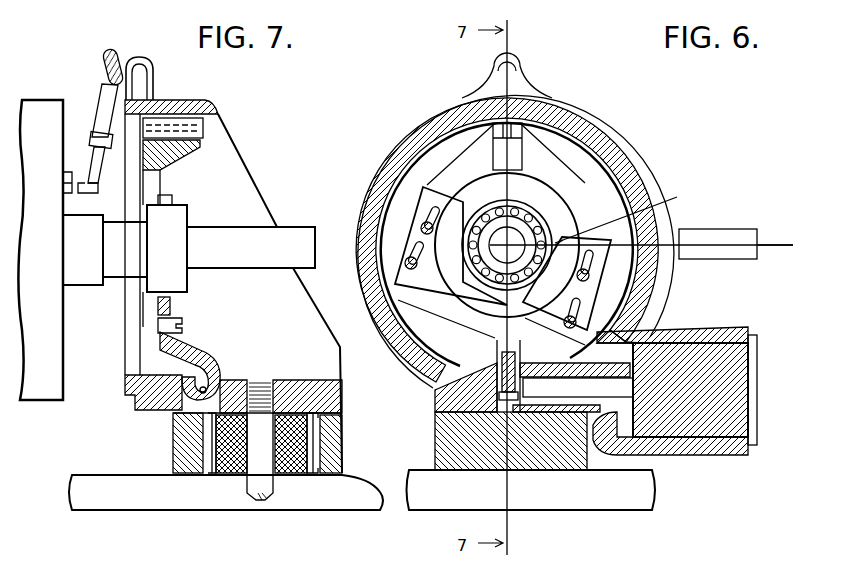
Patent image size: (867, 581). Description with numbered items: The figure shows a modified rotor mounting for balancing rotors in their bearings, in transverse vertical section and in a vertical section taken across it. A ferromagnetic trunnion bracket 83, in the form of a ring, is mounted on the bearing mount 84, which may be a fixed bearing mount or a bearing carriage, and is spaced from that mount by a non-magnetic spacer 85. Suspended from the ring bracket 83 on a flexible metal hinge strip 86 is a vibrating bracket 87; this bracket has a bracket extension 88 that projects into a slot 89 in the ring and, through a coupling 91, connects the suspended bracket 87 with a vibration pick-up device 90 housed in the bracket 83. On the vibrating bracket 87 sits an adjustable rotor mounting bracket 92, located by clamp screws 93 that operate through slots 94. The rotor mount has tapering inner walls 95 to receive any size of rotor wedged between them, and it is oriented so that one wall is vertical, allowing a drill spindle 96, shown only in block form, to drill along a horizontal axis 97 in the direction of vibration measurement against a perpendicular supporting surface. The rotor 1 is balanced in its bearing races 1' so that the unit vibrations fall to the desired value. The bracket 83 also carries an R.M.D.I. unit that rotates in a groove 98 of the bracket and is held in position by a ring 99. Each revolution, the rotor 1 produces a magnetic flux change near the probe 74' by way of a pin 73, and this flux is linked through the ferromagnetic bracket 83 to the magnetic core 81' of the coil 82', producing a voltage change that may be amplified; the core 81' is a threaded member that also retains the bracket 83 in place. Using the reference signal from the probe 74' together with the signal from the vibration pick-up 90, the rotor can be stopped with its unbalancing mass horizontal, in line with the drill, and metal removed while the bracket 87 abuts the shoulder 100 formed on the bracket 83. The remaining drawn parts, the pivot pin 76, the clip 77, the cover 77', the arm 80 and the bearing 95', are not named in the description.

In FIG. 7, the rotor 1 is at (40, 268).
In FIG. 7, the bearing races 1' is at (231, 243).
In FIG. 6, the bearing races 1' is at (641, 197).
In FIG. 7, the pin 73 is at (66, 172).
In FIG. 7, the probe 74' is at (94, 195).
In FIG. 7, the pivot pin 76 is at (118, 62).
In FIG. 7, the spring clip 77 is at (153, 78).
In FIG. 6, the cover 77' is at (511, 241).
In FIG. 7, the arm 80 is at (104, 92).
In FIG. 7, the magnetic core 81' is at (283, 477).
In FIG. 7, the coil 82' is at (295, 444).
In FIG. 7, the ferromagnetic trunnion bracket 83 is at (222, 110).
In FIG. 6, the ferromagnetic trunnion bracket 83 is at (420, 120).
In FIG. 7, the bearing mount 84 is at (240, 498).
In FIG. 6, the bearing mount 84 is at (635, 500).
In FIG. 7, the non-magnetic spacer 85 is at (183, 442).
In FIG. 6, the non-magnetic spacer 85 is at (456, 437).
In FIG. 6, the flexible metal hinge strip 86 is at (522, 110).
In FIG. 7, the bracket 87 is at (155, 185).
In FIG. 6, the bracket 87 is at (466, 133).
In FIG. 7, the bracket extension 88 is at (172, 347).
In FIG. 6, the bracket extension 88 is at (470, 385).
In FIG. 7, the slot 89 is at (231, 382).
In FIG. 6, the slot 89 is at (503, 402).
In FIG. 6, the vibration pick-up device 90 is at (738, 372).
In FIG. 6, the coupling 91 is at (635, 389).
In FIG. 6, the adjustable rotor mounting bracket 92 is at (625, 214).
In FIG. 6, the clamp screws 93 is at (568, 316).
In FIG. 6, the slots 94 is at (455, 240).
In FIG. 6, the tapering inner walls 95 is at (581, 210).
In FIG. 6, the bearing 95' is at (507, 234).
In FIG. 6, the drill spindle 96 is at (722, 232).
In FIG. 6, the horizontal axis 97 is at (775, 242).
In FIG. 7, the groove 98 is at (176, 100).
In FIG. 7, the ring 99 is at (127, 347).
In FIG. 6, the shoulder 100 is at (482, 368).